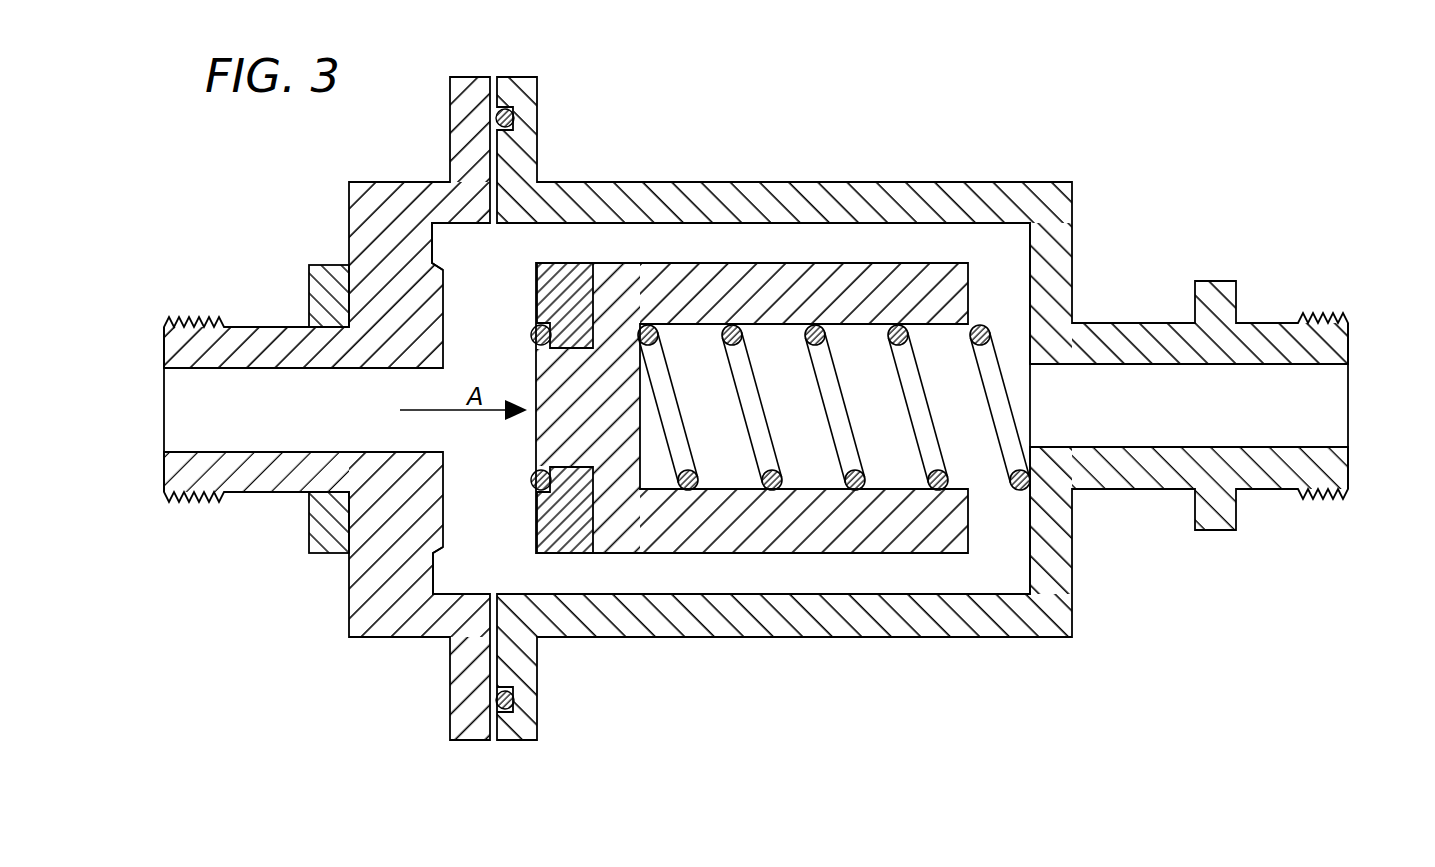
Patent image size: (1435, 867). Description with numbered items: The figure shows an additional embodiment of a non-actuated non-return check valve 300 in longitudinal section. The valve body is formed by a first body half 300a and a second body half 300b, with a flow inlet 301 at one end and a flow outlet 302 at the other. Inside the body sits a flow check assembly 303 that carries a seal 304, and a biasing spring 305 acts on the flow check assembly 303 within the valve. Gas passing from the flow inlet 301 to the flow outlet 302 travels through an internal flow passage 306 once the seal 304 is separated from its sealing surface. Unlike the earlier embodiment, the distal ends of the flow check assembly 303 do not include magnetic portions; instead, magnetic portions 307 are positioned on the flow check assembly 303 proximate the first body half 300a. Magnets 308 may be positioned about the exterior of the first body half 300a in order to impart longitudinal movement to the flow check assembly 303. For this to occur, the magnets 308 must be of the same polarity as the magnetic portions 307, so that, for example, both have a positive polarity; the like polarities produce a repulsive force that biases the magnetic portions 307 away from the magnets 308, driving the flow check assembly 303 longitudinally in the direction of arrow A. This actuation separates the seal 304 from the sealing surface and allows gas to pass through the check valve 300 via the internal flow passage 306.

The non-actuated non-return check valve 300 is at (756, 408).
The first body half 300a is at (419, 184).
The second body half 300b is at (595, 183).
The flow inlet 301 is at (235, 407).
The flow outlet 302 is at (1287, 400).
The flow check assembly 303 is at (716, 414).
The seal 304 is at (533, 337).
The biasing spring 305 is at (983, 327).
The internal flow passage 306 is at (848, 250).
The magnetic portions 307 is at (558, 272).
The magnets 308 is at (317, 266).